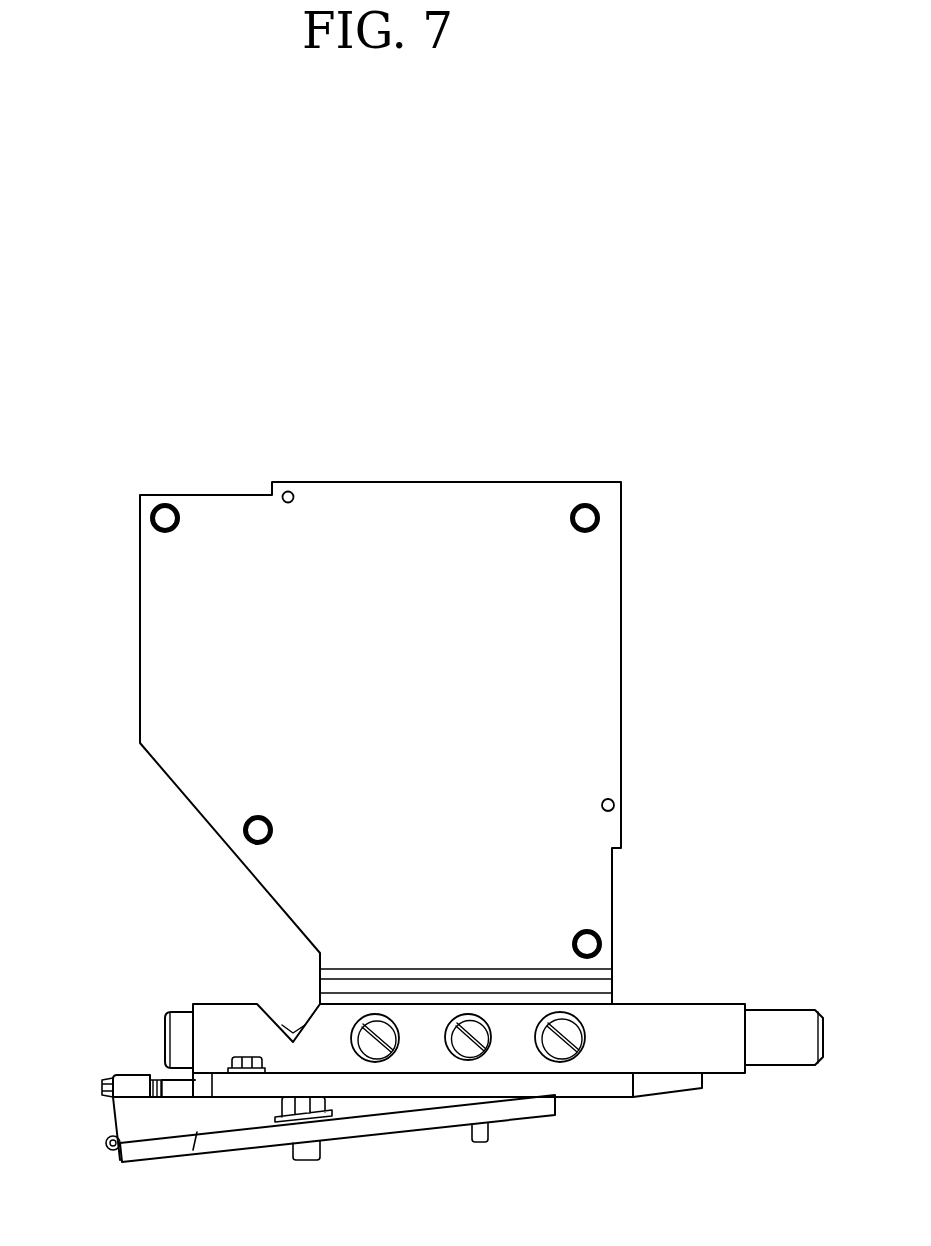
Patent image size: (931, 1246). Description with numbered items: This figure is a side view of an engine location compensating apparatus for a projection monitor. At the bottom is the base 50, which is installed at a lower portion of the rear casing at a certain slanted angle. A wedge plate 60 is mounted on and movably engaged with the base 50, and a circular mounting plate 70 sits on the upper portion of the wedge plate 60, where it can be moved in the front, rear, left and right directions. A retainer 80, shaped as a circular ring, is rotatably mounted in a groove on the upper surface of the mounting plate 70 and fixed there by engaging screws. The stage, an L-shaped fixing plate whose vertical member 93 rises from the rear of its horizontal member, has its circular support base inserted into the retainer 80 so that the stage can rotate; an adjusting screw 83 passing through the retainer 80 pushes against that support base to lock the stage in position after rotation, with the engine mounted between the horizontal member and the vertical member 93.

The vertical member 93 is at (603, 585).
The retainer 80 is at (702, 1020).
The adjusting screw 83 is at (573, 1030).
The mounting plate 70 is at (602, 1088).
The wedge plate 60 is at (130, 1117).
The base 50 is at (403, 1123).